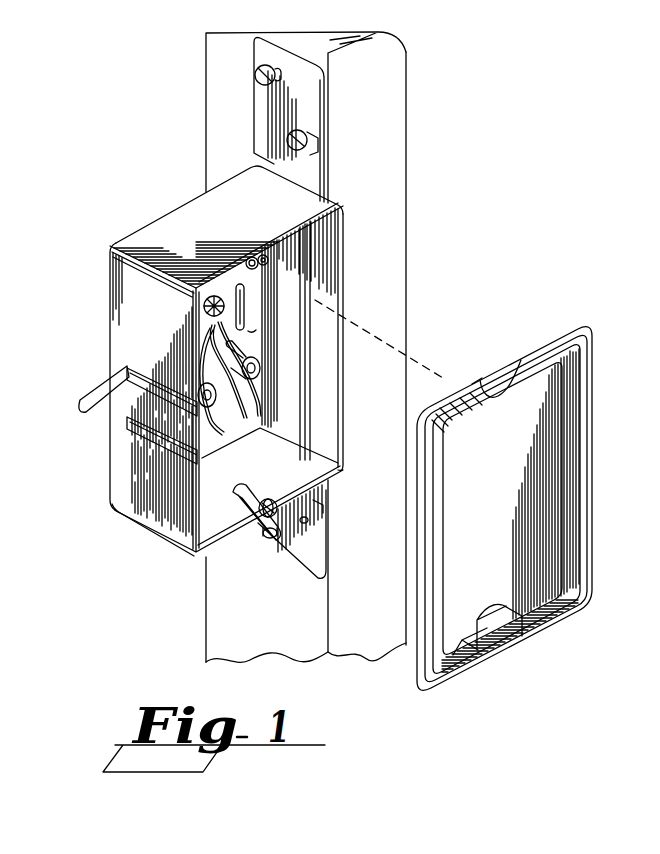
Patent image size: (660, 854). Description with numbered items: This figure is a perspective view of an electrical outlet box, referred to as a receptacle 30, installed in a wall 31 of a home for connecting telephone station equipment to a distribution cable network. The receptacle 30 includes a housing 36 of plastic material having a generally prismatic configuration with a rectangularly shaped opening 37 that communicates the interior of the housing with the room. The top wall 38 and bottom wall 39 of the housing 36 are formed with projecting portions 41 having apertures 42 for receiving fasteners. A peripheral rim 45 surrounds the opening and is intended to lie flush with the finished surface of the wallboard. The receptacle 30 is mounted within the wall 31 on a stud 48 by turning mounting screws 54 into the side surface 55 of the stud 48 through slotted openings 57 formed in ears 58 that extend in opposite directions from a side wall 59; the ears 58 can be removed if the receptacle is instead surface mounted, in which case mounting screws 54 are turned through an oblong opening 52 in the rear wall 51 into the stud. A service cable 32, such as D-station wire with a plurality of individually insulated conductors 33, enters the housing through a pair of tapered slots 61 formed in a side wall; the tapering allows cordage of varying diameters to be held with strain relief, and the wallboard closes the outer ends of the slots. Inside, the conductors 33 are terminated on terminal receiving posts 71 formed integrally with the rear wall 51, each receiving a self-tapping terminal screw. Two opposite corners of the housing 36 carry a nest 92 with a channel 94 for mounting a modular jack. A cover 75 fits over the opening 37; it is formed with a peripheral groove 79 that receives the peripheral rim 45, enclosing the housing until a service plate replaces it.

The receptacle 30 is at (168, 560).
The wall 31 is at (364, 664).
The service cable 32 is at (93, 395).
The conductors 33 is at (278, 400).
The housing 36 is at (130, 220).
The opening 37 is at (405, 279).
The top wall 38 is at (177, 222).
The bottom wall 39 is at (310, 484).
The projecting portions 41 is at (247, 503).
The apertures 42 is at (264, 517).
The peripheral rim 45 is at (347, 233).
The stud 48 is at (388, 81).
The rear wall 51 is at (251, 330).
The oblong opening 52 is at (243, 308).
The mounting screws 54 is at (252, 82).
The side surface 55 is at (215, 634).
The slotted openings 57 is at (257, 63).
The ears 58 is at (306, 90).
The side wall 59 is at (322, 378).
The tapered slots 61 is at (158, 376).
The terminal receiving posts 71 is at (266, 361).
The cover 75 is at (574, 503).
The peripheral groove 79 is at (548, 330).
The nest 92 is at (176, 523).
The channel 94 is at (190, 531).